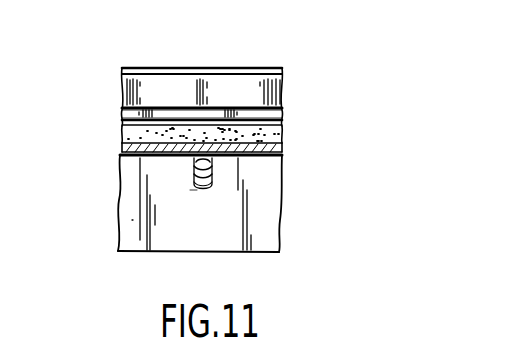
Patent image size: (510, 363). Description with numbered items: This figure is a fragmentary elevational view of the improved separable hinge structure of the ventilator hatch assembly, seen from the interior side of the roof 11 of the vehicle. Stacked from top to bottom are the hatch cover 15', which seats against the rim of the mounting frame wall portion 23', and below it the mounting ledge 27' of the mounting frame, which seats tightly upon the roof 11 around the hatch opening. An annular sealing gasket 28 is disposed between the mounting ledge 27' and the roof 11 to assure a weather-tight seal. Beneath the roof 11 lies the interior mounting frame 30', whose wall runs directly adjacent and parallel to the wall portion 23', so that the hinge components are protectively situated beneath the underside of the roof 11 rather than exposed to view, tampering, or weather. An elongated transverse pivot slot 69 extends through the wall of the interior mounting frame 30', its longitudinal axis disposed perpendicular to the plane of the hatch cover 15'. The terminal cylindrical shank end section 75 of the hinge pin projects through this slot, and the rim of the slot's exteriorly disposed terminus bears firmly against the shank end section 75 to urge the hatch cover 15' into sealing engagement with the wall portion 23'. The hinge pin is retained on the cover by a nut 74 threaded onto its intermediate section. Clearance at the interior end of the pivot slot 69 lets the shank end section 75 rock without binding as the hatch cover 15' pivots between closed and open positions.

The hatch cover 15' is at (223, 74).
The mounting ledge 27' is at (166, 96).
The mounting frame wall portion 23' is at (242, 110).
The sealing gasket 28 is at (130, 132).
The roof 11 is at (272, 148).
The interior mounting frame 30' is at (241, 203).
The nut 74 is at (195, 194).
The shank end section 75 is at (197, 159).
The pivot slot 69 is at (196, 194).